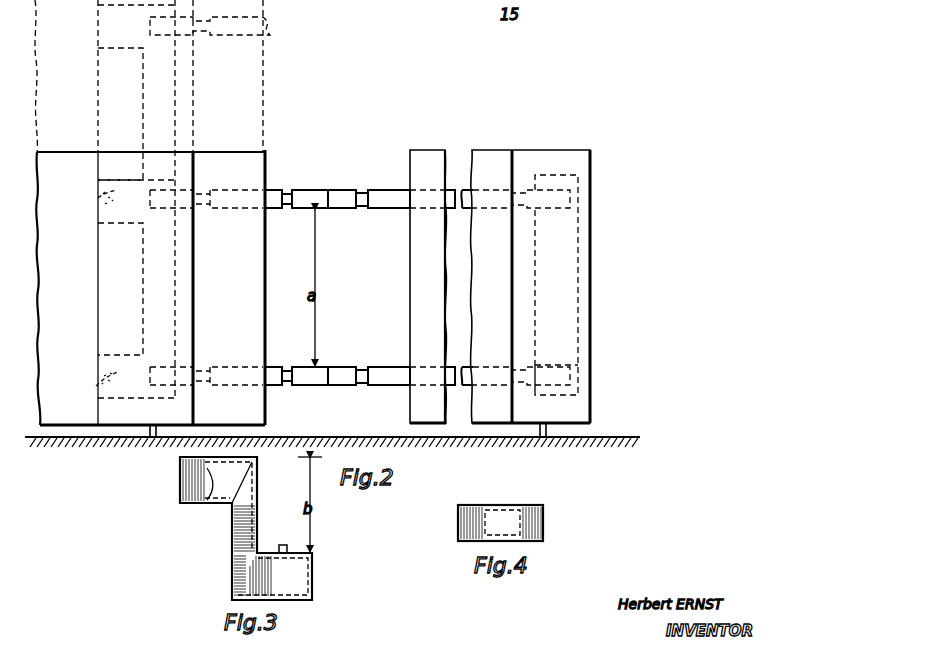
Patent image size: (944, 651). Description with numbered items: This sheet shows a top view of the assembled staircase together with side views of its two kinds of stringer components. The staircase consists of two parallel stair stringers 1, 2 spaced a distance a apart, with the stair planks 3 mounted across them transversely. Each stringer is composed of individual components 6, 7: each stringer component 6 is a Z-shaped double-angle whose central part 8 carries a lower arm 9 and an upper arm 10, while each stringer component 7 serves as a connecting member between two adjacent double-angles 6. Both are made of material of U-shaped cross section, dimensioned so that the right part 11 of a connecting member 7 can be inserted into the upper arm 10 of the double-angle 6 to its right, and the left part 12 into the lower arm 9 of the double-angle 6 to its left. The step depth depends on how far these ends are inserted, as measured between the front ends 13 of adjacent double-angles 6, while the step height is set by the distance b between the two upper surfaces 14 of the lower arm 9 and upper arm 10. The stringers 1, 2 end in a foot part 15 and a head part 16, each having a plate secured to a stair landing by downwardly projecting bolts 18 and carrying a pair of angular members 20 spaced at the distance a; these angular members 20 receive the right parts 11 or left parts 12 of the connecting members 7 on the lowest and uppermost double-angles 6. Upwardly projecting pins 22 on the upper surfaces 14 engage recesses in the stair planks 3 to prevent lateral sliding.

In FIG. 2, the stair stringer 1 is at (383, 386).
In FIG. 2, the stair stringer 2 is at (389, 189).
In FIG. 2, the stair plank 3 is at (57, 348).
In FIG. 2, the stringer component (double-angle) 6 is at (311, 189).
In FIG. 3, the stringer component (double-angle) 6 is at (203, 555).
In FIG. 2, the stringer component (connecting member) 7 is at (362, 192).
In FIG. 4, the stringer component (connecting member) 7 is at (501, 515).
In FIG. 3, the central part 8 is at (242, 545).
In FIG. 3, the lower arm 9 is at (305, 577).
In FIG. 3, the upper arm 10 is at (204, 505).
In FIG. 4, the right part 11 is at (535, 522).
In FIG. 4, the left part 12 is at (470, 522).
In FIG. 3, the front end (front edge) 13 is at (260, 490).
In FIG. 3, the upper surface 14 is at (250, 453).
In FIG. 2, the foot part 15 is at (562, 312).
In FIG. 2, the head part 16 is at (150, 263).
In FIG. 2, the bolt 18 is at (96, 197).
In FIG. 2, the angular member 20 is at (572, 198).
In FIG. 3, the pin 22 is at (288, 545).